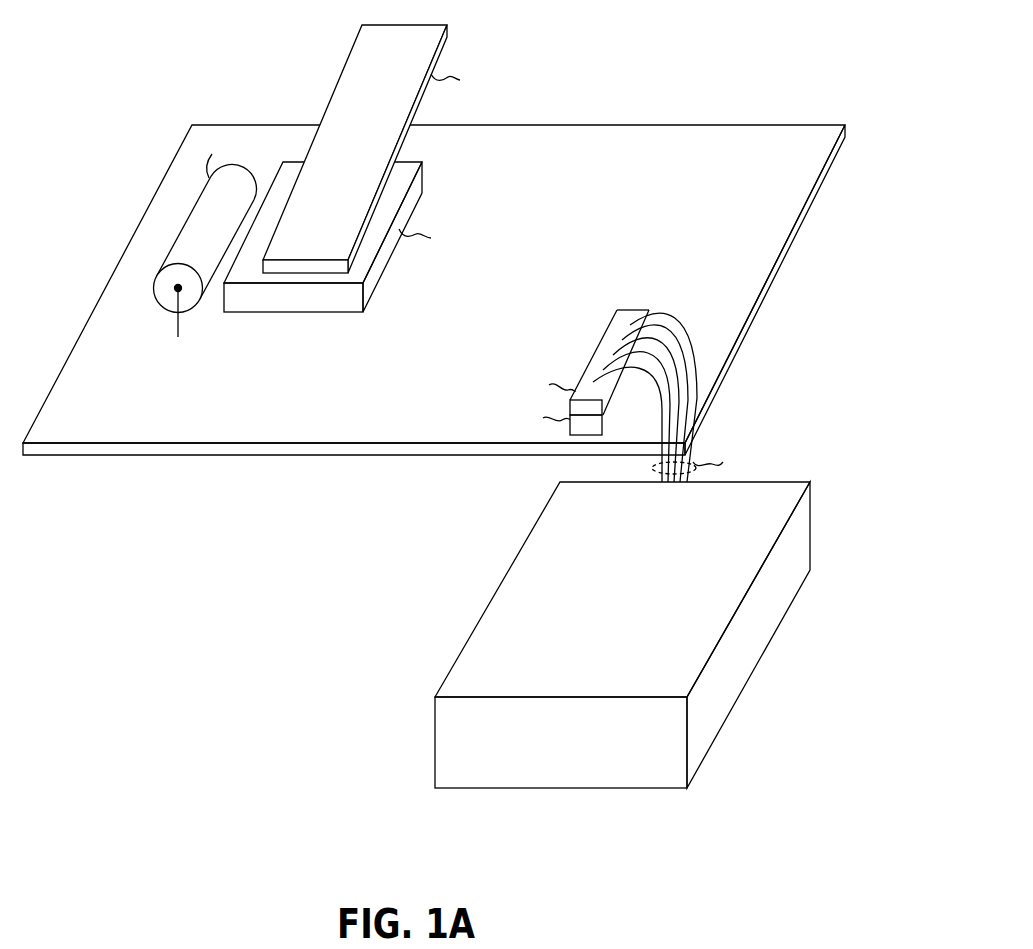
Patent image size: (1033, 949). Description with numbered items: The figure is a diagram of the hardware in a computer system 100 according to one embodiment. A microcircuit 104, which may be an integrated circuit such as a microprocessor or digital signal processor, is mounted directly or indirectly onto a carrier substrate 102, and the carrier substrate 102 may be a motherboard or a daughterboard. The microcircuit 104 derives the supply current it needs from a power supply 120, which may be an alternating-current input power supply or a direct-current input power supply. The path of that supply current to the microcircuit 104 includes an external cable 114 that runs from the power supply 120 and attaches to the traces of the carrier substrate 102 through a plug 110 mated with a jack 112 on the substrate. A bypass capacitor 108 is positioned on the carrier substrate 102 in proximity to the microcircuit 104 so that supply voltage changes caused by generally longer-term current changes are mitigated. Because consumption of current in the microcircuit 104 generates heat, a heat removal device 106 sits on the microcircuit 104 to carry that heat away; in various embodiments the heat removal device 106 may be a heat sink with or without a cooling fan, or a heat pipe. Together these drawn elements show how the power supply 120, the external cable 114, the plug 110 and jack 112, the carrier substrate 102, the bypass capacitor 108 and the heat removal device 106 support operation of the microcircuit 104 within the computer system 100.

The computer system 100 is at (150, 614).
The carrier substrate 102 is at (765, 165).
The microcircuit 104 is at (343, 306).
The heat removal device 106 is at (343, 243).
The bypass capacitor 108 is at (220, 253).
The plug 110 is at (600, 345).
The jack 112 is at (603, 427).
The external cable 114 is at (650, 470).
The power supply 120 is at (582, 763).